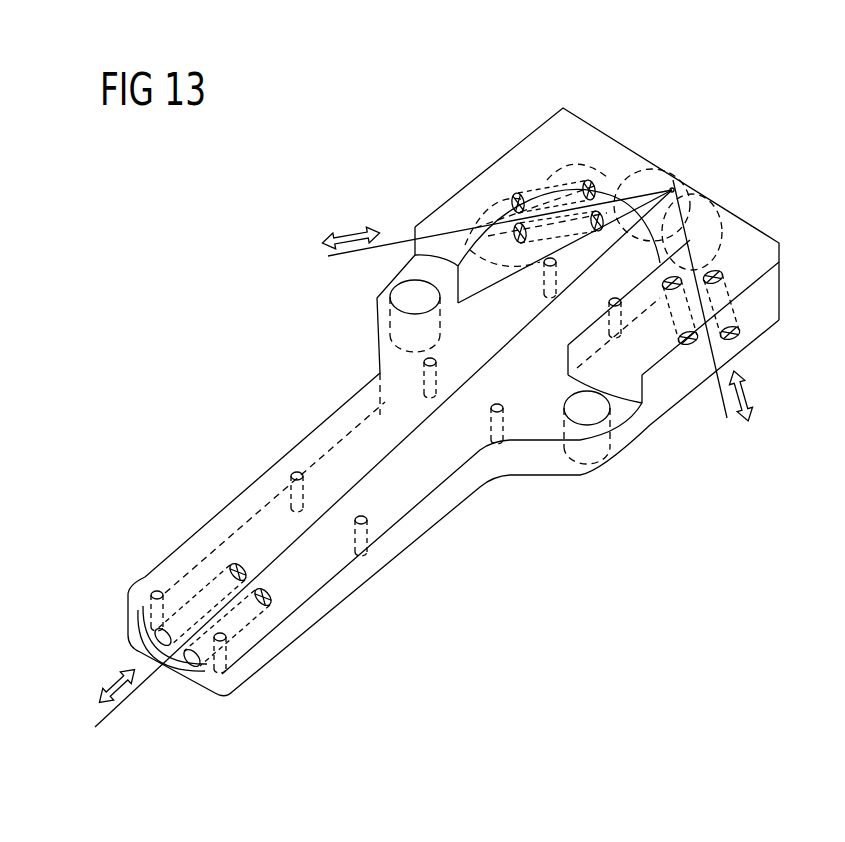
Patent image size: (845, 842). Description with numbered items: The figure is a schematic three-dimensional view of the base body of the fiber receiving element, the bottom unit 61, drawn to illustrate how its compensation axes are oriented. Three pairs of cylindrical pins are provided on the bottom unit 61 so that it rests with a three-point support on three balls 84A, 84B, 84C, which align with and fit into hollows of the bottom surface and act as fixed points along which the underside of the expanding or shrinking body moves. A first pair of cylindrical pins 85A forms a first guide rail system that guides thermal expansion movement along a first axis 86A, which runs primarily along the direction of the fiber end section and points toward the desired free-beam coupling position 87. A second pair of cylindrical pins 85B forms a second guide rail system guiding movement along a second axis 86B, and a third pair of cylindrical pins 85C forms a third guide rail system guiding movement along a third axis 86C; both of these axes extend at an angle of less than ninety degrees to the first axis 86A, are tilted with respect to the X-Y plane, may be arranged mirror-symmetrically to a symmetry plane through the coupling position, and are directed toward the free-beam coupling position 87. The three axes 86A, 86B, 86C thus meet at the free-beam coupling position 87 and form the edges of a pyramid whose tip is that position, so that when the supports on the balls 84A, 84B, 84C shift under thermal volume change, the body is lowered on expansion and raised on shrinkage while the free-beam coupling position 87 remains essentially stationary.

The bottom unit 61 is at (700, 138).
The ball 84A is at (253, 615).
The ball 84B is at (545, 202).
The ball 84C is at (740, 318).
The first pair of cylindrical pins 85A is at (200, 580).
The second pair of cylindrical pins 85B is at (569, 185).
The third pair of cylindrical pins 85C is at (725, 262).
The first axis 86A is at (130, 693).
The second axis 86B is at (395, 240).
The third axis 86C is at (723, 400).
The free-beam coupling position 87 is at (673, 183).